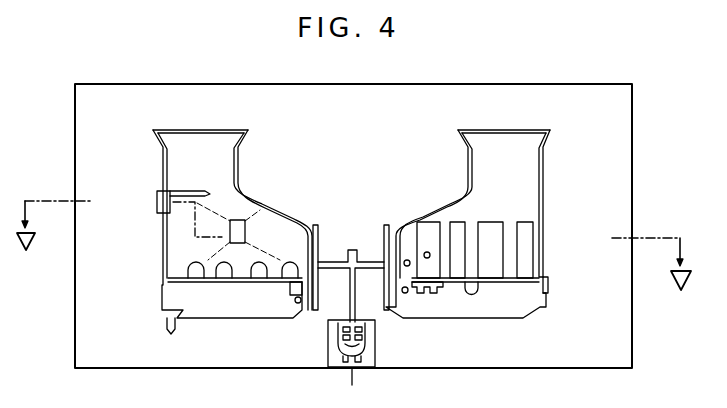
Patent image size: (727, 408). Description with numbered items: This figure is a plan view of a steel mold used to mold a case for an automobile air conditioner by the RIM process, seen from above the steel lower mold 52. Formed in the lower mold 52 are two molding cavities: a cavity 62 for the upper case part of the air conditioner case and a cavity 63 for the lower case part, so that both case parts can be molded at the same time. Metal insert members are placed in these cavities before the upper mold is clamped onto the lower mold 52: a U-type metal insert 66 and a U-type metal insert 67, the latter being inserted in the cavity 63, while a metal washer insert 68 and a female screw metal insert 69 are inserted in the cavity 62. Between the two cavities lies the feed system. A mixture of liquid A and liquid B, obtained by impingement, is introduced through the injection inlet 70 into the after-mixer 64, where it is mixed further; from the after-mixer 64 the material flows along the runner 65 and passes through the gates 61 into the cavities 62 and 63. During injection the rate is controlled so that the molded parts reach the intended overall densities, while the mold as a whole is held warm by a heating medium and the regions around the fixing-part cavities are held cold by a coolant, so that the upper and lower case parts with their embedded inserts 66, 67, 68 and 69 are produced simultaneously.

The steel lower mold 52 is at (517, 100).
The gates 61 is at (314, 226).
The cavity for upper case part 62 is at (520, 183).
The cavity for lower case part 63 is at (177, 169).
The after-mixer 64 is at (375, 338).
The runner 65 is at (330, 268).
The U-type metal insert 66 is at (157, 205).
The U-type metal insert 67 is at (169, 328).
The metal washer insert 68 is at (430, 294).
The female screw metal insert 69 is at (293, 303).
The injection inlet 70 is at (353, 388).